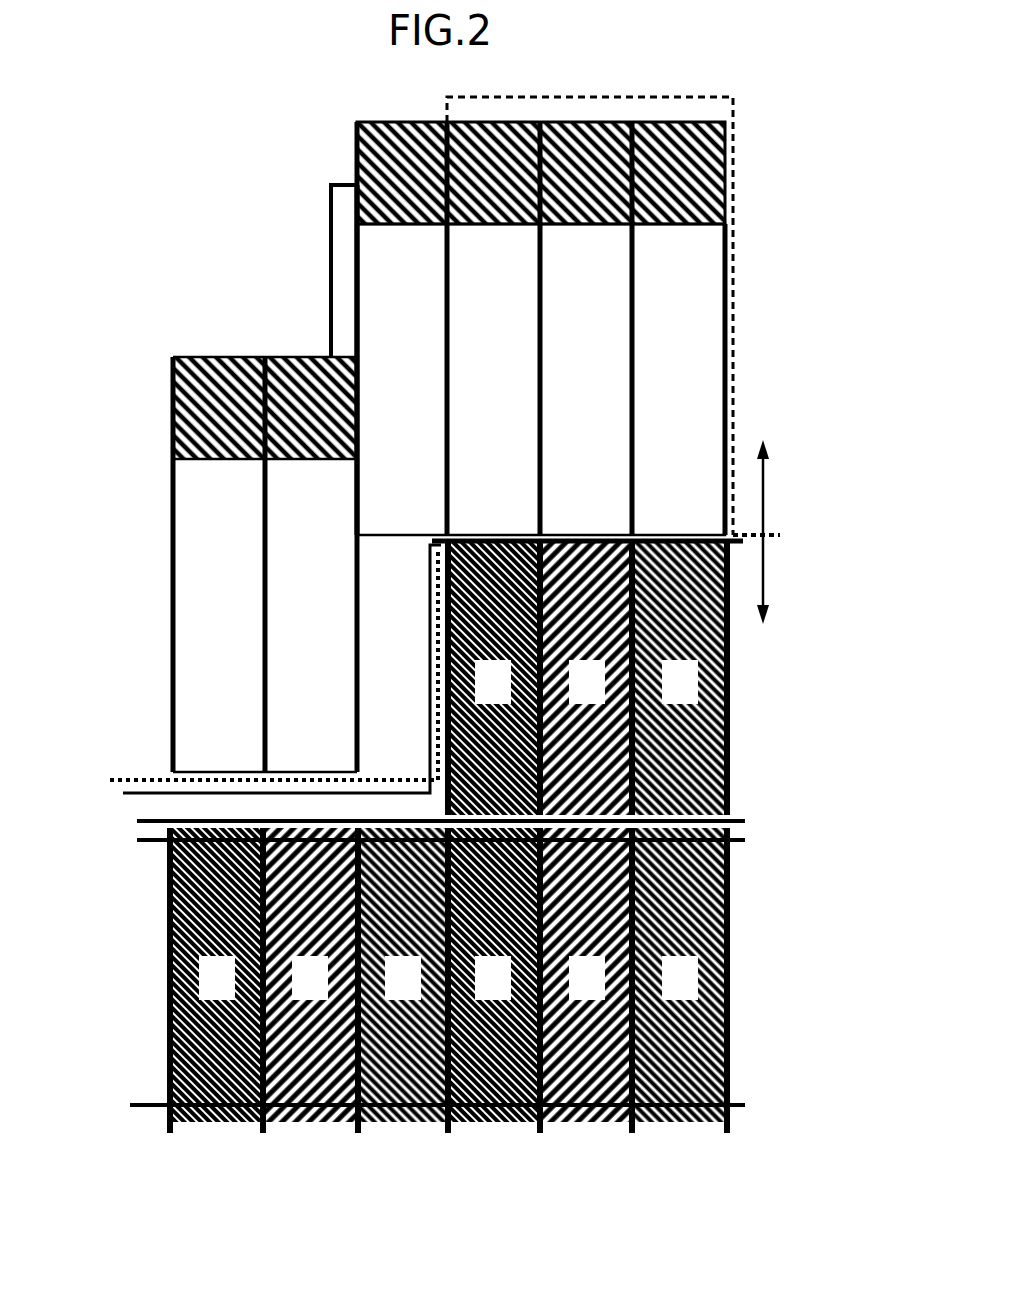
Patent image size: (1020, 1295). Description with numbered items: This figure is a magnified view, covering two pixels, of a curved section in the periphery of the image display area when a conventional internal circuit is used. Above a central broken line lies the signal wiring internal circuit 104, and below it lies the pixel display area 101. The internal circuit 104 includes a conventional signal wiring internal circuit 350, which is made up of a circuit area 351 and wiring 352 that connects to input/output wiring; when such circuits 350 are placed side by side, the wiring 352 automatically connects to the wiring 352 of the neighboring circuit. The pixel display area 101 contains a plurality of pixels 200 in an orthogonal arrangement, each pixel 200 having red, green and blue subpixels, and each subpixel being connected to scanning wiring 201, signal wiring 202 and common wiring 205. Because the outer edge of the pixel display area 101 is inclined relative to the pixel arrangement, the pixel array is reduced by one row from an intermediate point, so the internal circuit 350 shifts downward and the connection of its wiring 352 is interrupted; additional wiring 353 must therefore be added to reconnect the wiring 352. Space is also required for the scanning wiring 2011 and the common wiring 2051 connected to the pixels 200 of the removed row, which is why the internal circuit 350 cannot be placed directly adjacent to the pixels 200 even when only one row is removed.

The pixel display area 101 is at (787, 579).
The signal wiring internal circuit 104 is at (787, 487).
The pixel 200 is at (704, 720).
The scanning wiring 201 is at (130, 1105).
The signal wiring 202 is at (168, 1013).
The common wiring 205 is at (158, 843).
The scanning wiring 2011 is at (137, 822).
The common wiring 2051 is at (123, 794).
The conventional signal wiring internal circuit 350 is at (733, 252).
The circuit area 351 is at (726, 386).
The wiring 352 is at (726, 172).
The wiring 353 is at (331, 243).